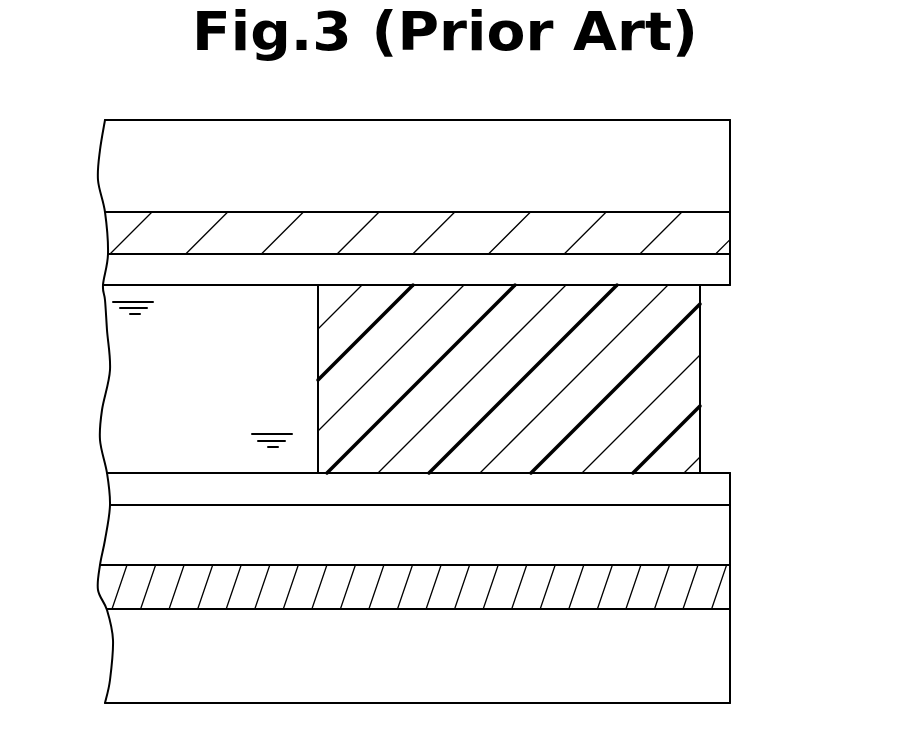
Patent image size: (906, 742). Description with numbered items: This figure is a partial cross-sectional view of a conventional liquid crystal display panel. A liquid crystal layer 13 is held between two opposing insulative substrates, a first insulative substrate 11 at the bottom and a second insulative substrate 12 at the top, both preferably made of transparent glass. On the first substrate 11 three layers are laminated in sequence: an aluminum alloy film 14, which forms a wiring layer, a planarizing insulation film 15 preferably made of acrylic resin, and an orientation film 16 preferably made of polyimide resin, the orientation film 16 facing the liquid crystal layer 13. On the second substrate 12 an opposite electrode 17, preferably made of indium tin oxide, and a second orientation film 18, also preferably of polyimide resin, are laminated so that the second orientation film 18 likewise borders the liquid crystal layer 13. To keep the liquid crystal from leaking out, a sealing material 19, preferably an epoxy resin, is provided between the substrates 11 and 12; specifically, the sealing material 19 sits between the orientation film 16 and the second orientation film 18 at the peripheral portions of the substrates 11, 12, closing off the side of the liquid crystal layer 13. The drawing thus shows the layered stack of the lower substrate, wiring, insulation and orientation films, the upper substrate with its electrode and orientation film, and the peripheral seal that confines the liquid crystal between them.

The first insulative substrate 11 is at (727, 661).
The second insulative substrate 12 is at (730, 175).
The liquid crystal layer 13 is at (127, 372).
The aluminum alloy film 14 is at (727, 584).
The planarizing insulation film 15 is at (727, 537).
The orientation film 16 is at (727, 489).
The opposite electrode 17 is at (730, 229).
The second orientation film 18 is at (730, 273).
The sealing material 19 is at (700, 386).